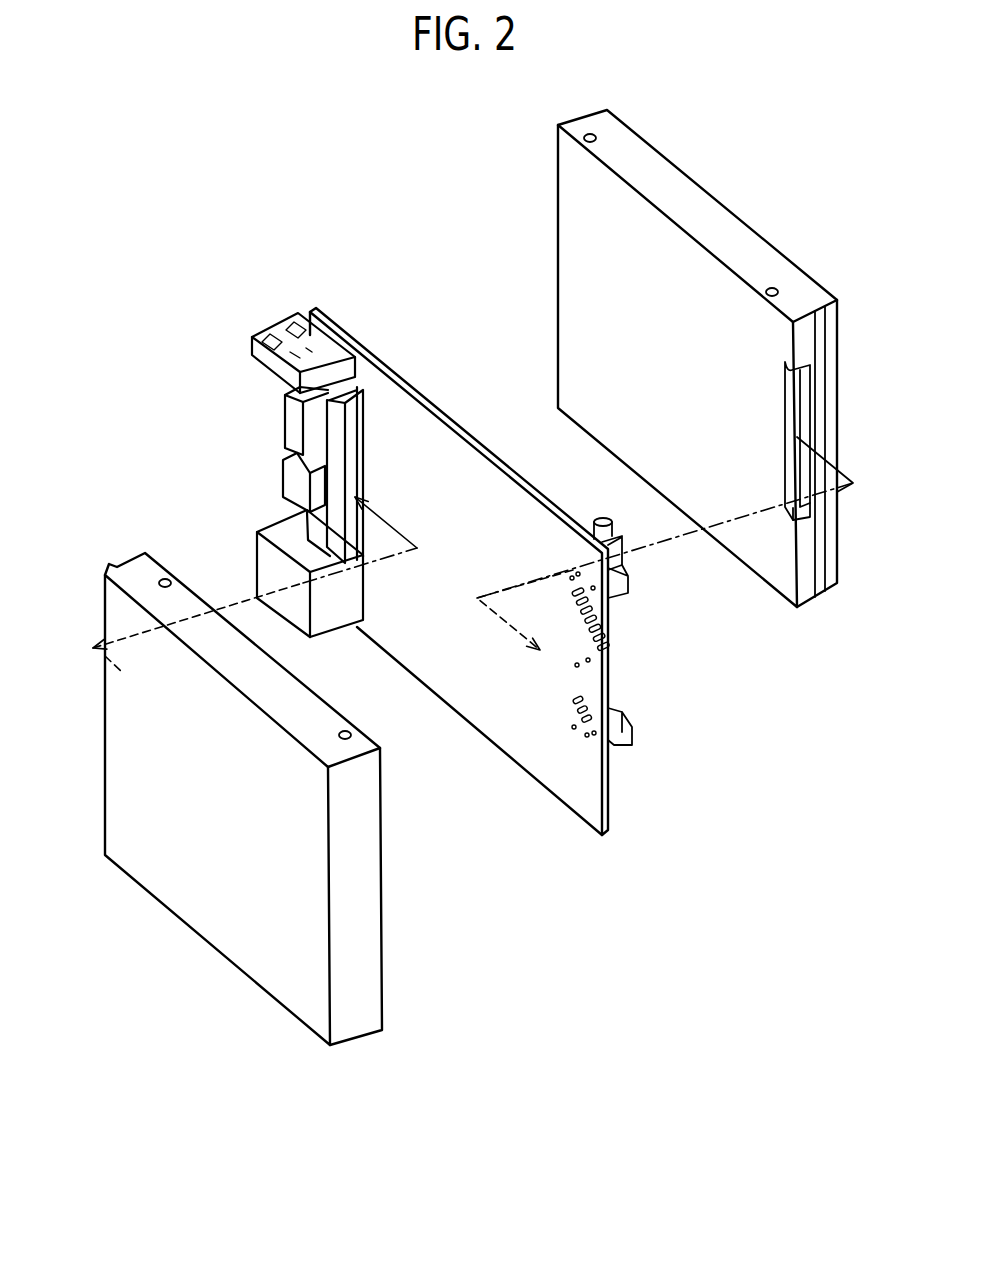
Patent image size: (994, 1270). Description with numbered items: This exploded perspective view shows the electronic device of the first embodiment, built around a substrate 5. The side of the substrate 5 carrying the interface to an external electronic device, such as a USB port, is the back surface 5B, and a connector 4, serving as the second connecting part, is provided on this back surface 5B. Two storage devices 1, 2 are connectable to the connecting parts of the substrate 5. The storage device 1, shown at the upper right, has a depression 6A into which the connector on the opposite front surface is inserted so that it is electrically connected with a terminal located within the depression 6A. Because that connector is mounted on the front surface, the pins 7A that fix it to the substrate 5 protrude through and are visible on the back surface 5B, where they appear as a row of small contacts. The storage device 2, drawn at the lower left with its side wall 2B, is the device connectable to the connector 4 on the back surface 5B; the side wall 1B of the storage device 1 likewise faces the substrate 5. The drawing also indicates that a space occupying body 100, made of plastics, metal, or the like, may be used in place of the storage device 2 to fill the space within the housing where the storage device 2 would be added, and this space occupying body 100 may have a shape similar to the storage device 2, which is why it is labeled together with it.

The storage device 1 is at (672, 358).
The side wall of first housing 1B is at (585, 300).
The storage device 2 is at (225, 828).
The space occupying body 100 is at (225, 828).
The side wall of second housing 2B is at (153, 862).
The connector 4 is at (350, 462).
The substrate 5 is at (471, 534).
The back surface 5B is at (452, 673).
The depression 6A is at (797, 424).
The pins 7A is at (577, 655).